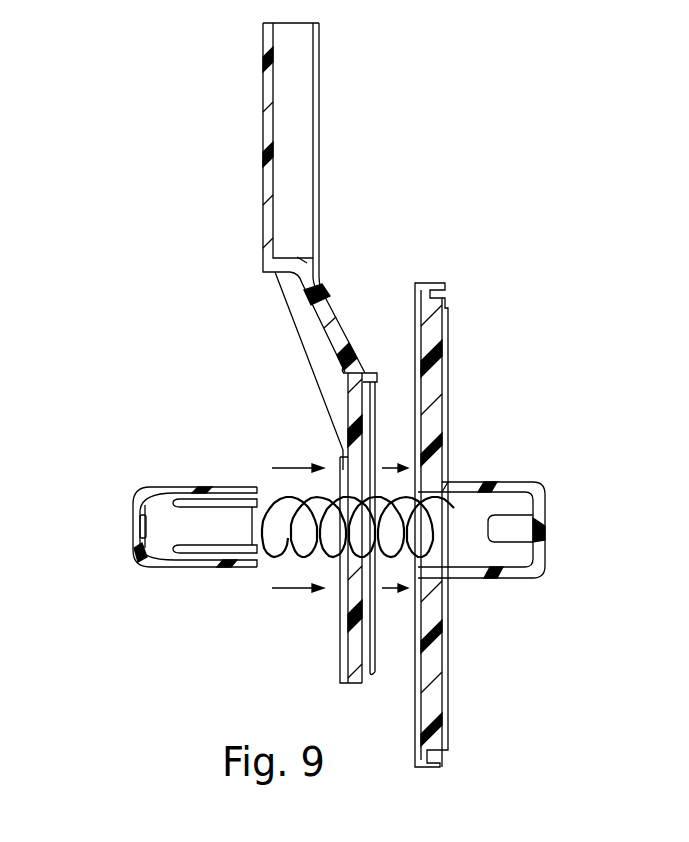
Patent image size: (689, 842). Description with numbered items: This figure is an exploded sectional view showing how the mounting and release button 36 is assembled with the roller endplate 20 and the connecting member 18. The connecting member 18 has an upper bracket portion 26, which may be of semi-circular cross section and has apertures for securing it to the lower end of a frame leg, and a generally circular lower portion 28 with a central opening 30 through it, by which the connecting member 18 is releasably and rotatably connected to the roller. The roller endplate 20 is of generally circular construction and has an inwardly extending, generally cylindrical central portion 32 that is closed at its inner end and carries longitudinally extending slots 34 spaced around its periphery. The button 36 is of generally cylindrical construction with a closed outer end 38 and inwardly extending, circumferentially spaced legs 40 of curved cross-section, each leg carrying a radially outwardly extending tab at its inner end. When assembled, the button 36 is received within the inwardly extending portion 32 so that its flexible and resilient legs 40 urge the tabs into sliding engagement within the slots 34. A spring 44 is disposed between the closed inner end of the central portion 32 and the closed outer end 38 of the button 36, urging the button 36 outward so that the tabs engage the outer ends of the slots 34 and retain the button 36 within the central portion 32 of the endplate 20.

The connecting member 18 is at (343, 309).
The roller endplate 20 is at (448, 333).
The upper bracket portion 26 is at (318, 133).
The lower portion 28 is at (342, 510).
The central opening 30 is at (342, 568).
The inwardly extending central portion 32 is at (515, 480).
The slots 34 is at (507, 530).
The mounting and release button 36 is at (140, 476).
The closed outer end 38 is at (133, 525).
The legs 40 is at (223, 520).
The spring 44 is at (272, 558).